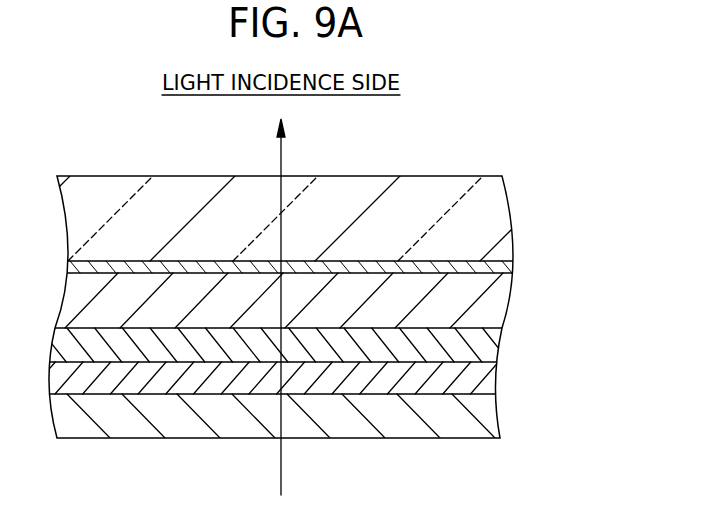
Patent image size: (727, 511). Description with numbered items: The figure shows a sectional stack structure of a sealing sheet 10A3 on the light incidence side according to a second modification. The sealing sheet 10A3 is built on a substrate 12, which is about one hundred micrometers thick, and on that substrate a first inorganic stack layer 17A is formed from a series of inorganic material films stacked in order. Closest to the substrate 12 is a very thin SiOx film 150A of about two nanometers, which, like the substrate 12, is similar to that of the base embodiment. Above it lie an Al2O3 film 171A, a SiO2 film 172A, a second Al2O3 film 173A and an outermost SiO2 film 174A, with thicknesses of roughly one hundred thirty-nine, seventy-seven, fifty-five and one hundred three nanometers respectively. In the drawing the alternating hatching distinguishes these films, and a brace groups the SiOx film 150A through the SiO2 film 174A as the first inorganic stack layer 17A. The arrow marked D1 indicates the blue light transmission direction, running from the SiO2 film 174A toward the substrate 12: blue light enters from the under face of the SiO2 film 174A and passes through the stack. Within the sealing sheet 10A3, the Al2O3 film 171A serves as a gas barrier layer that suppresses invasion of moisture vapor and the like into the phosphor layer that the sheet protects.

The sealing sheet 10A3 is at (363, 268).
The substrate 12 is at (500, 207).
The first inorganic stack layer 17A is at (337, 344).
The SiOx film 150A is at (512, 263).
The Al2O3 film 171A is at (497, 305).
The SiO2 film 172A is at (487, 347).
The Al2O3 film 173A is at (495, 375).
The SiO2 film 174A is at (303, 416).
The blue light transmission direction D1 is at (284, 470).